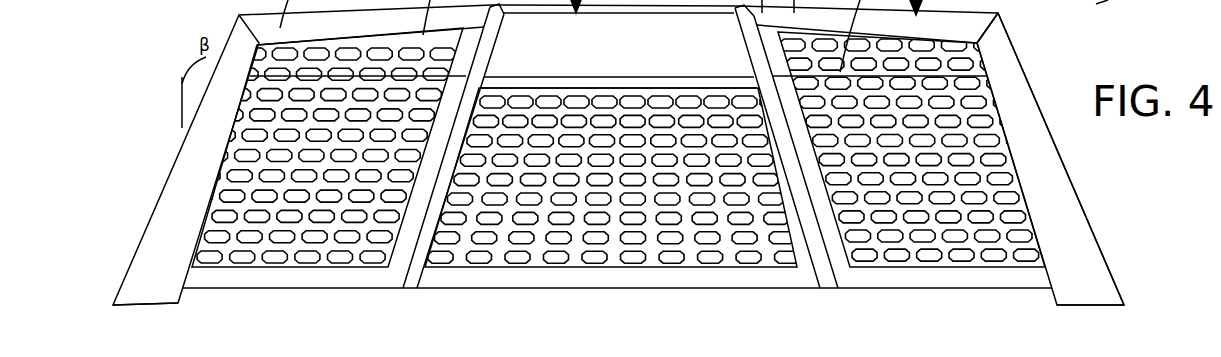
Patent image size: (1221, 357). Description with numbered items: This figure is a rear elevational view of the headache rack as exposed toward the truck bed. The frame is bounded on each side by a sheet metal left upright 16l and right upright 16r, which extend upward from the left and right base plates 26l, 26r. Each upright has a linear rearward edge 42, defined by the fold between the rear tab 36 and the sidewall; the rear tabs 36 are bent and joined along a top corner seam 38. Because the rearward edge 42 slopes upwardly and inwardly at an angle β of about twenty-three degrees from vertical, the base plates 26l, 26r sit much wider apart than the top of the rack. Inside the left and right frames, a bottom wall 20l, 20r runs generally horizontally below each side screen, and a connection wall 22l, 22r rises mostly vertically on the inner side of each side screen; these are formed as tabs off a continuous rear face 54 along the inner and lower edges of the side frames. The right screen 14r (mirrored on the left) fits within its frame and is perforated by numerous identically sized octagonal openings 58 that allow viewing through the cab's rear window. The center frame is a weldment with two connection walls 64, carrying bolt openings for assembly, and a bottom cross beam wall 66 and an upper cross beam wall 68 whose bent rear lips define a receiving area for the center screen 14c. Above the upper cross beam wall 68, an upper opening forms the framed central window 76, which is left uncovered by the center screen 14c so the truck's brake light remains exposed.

The left upright 16l is at (188, 190).
The right upright 16r is at (1017, 100).
The left base plate 26l is at (167, 355).
The right base plate 26r is at (1111, 330).
The bottom wall of left frame 20l is at (297, 277).
The bottom wall of right frame 20r is at (925, 277).
The left connection wall 22l is at (397, 253).
The right connection wall 22r is at (817, 205).
The connection walls of center frame 64 is at (425, 242).
The center screen 14c is at (545, 248).
The bottom cross beam wall 66 is at (613, 277).
The openings 58 is at (677, 257).
The continuous rear face 54 is at (900, 280).
The right screen 14r is at (973, 245).
The rearward edge 42 is at (1107, 258).
The rear tab 36 is at (1058, 213).
The top corner seam 38 is at (993, 33).
The upper cross beam wall 68 is at (533, 87).
The framed central window 76 is at (639, 59).